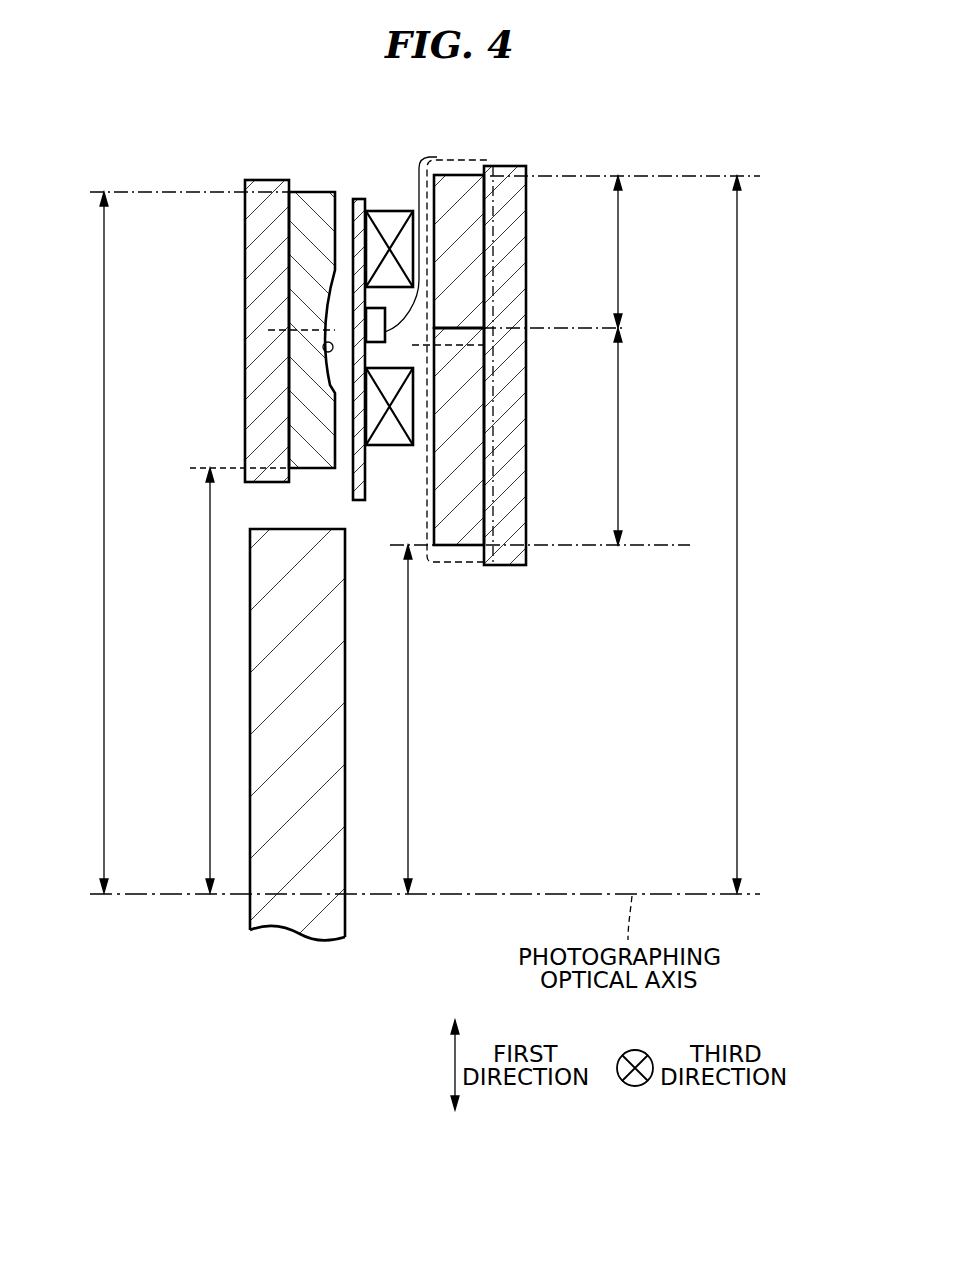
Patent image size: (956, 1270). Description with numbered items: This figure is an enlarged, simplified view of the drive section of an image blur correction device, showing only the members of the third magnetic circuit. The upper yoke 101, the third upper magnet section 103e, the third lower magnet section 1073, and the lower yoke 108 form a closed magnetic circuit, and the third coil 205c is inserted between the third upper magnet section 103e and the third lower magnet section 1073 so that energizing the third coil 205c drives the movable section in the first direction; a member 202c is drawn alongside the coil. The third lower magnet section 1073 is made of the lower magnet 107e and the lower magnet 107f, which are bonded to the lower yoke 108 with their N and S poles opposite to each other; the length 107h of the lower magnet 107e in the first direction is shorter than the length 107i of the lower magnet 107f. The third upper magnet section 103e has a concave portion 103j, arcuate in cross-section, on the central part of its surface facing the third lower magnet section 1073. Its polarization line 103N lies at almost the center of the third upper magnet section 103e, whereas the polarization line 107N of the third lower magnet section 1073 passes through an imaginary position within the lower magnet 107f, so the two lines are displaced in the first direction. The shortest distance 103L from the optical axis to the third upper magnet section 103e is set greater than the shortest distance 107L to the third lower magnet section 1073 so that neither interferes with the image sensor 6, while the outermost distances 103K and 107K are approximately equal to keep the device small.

The image sensor 6 is at (335, 668).
The upper yoke 101 is at (258, 213).
The third upper magnet section 103e is at (307, 206).
The polarization line of the third upper magnet section 103N is at (297, 318).
The concave portion 103j is at (323, 350).
The outermost distance from the photographing optical axis to the third upper magnet 103K is at (108, 542).
The shortest distance from the photographing optical axis to the third upper magnet 103L is at (212, 680).
The third coil 205c is at (385, 228).
The coil holding member 202c is at (421, 230).
The lower magnet 107e is at (465, 192).
The third lower magnet section 1073 is at (475, 158).
The lower magnet 107f is at (460, 535).
The polarization line of the third lower magnet section 107N is at (462, 348).
The length of the lower magnet 107e in the first direction 107h is at (623, 252).
The length of the lower magnet 107f in the first direction 107i is at (622, 436).
The outermost distance from the photographing optical axis to the third lower magnet 107K is at (741, 534).
The shortest distance from the photographing optical axis to the third lower magnet 107L is at (411, 719).
The lower yoke 108 is at (513, 262).